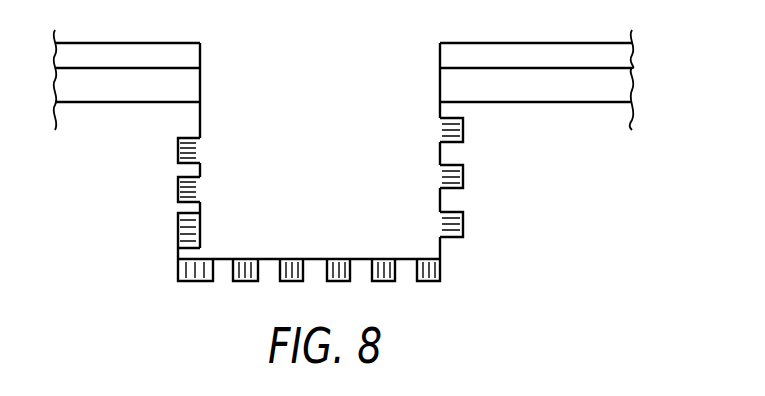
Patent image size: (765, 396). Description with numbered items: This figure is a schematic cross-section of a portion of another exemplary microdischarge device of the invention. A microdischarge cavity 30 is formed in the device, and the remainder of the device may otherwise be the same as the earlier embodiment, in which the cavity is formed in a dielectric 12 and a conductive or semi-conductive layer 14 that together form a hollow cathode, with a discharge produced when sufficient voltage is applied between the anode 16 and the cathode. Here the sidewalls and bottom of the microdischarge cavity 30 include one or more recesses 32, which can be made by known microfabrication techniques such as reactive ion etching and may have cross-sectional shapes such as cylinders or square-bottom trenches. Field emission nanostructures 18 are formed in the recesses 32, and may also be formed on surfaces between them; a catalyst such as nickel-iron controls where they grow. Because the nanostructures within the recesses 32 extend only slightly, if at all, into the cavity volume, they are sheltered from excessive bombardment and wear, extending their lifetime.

The dielectric 12 is at (583, 85).
The conductive layer 14 is at (511, 204).
The anode 16 is at (533, 53).
The field emission nanostructures 18 is at (247, 248).
The microdischarge cavity 30 is at (343, 73).
The recesses 32 is at (442, 188).